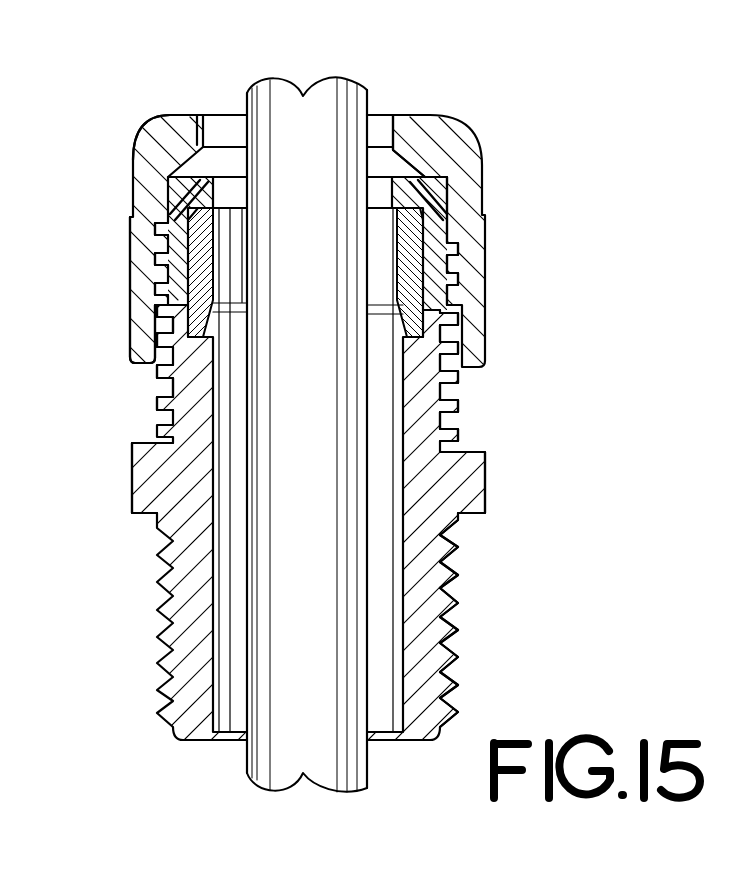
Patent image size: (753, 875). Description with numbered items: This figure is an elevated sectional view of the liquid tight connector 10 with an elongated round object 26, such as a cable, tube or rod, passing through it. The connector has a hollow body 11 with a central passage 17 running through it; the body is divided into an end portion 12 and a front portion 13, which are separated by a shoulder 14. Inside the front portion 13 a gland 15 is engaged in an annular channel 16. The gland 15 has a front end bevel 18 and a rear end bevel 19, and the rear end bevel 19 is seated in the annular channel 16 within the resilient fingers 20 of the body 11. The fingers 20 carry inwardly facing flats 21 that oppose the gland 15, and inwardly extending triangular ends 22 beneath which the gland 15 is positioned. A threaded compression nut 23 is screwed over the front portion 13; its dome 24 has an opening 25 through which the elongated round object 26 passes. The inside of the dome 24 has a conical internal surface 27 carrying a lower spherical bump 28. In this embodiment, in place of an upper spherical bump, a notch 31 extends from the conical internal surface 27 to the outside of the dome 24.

The liquid tight connector 10 is at (490, 312).
The body 11 is at (466, 400).
The end portion 12 is at (444, 628).
The front portion 13 is at (192, 412).
The shoulder 14 is at (487, 478).
The gland 15 is at (160, 225).
The annular channel 16 is at (158, 308).
The central passage 17 is at (225, 468).
The front end bevel 18 is at (447, 205).
The rear end bevel 19 is at (193, 400).
The resilient fingers 20 is at (460, 225).
The flats 21 is at (440, 268).
The triangular ends 22 is at (142, 156).
The threaded compression nut 23 is at (160, 122).
The dome 24 is at (436, 118).
The opening 25 is at (385, 132).
The elongated round object 26 is at (352, 100).
The conical internal surface 27 is at (180, 168).
The lower spherical bump 28 is at (428, 172).
The notch 31 is at (207, 130).